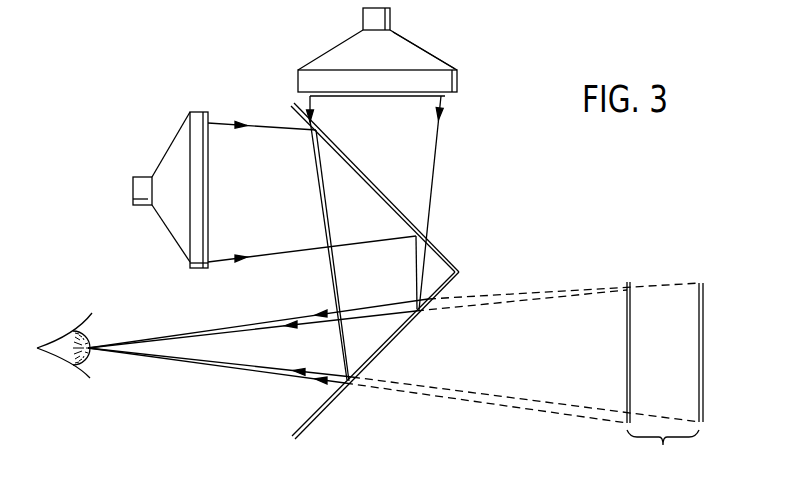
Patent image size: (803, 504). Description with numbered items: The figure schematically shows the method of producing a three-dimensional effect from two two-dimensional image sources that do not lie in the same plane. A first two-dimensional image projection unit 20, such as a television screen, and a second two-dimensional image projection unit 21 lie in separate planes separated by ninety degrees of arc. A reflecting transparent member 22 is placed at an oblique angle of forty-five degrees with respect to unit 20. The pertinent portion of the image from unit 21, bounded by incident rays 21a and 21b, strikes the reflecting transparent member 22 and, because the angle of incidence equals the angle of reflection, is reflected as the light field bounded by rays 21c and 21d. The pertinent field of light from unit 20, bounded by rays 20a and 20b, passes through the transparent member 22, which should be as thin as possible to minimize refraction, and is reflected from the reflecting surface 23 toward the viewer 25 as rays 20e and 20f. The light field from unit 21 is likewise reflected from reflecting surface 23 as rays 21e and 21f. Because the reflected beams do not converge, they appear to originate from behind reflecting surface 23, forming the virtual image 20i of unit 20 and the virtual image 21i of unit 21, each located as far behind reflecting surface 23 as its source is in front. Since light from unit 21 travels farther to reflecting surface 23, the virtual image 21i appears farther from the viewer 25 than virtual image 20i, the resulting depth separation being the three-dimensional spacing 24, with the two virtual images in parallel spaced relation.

The two-dimensional image projection unit 20 is at (421, 49).
The light ray 20a is at (316, 119).
The light ray 20b is at (436, 158).
The reflected light ray 20e is at (301, 318).
The reflected light ray 20f is at (290, 376).
The virtual image 20i is at (630, 318).
The two-dimensional image projection unit 21 is at (177, 134).
The incident light ray 21a is at (262, 125).
The incident light ray 21b is at (275, 254).
The reflected light ray 21c is at (323, 191).
The reflected light ray 21d is at (415, 280).
The reflected light ray 21e is at (251, 330).
The reflected light ray 21f is at (258, 367).
The virtual image 21i is at (704, 312).
The reflecting transparent member 22 is at (404, 219).
The reflecting surface 23 is at (331, 399).
The three-dimensional spacing 24 is at (663, 446).
The viewer 25 is at (53, 358).